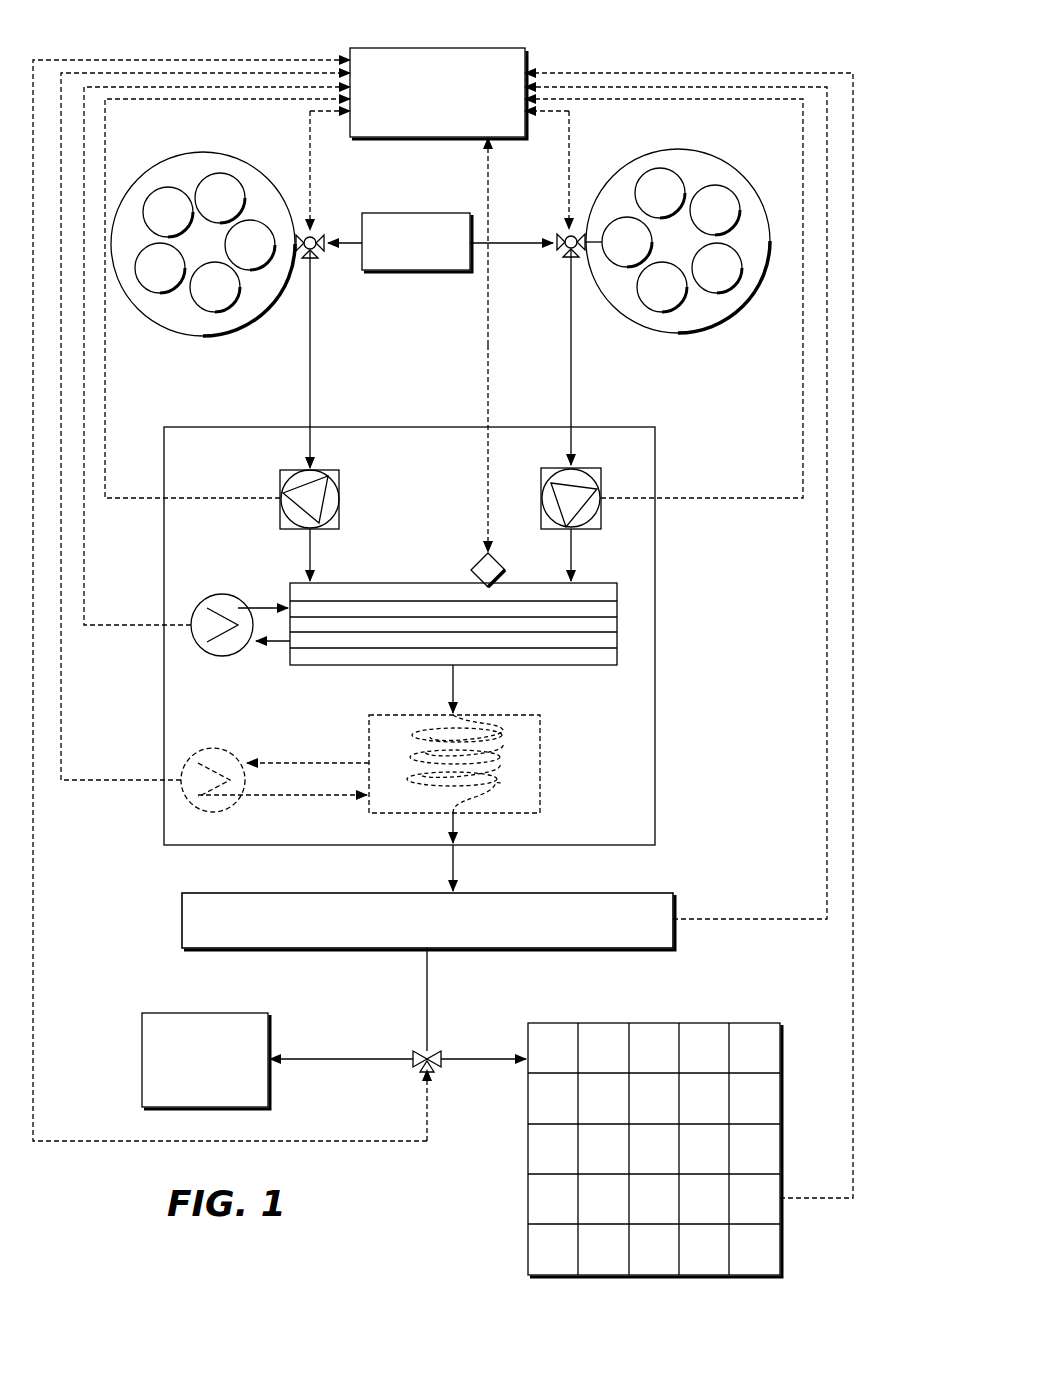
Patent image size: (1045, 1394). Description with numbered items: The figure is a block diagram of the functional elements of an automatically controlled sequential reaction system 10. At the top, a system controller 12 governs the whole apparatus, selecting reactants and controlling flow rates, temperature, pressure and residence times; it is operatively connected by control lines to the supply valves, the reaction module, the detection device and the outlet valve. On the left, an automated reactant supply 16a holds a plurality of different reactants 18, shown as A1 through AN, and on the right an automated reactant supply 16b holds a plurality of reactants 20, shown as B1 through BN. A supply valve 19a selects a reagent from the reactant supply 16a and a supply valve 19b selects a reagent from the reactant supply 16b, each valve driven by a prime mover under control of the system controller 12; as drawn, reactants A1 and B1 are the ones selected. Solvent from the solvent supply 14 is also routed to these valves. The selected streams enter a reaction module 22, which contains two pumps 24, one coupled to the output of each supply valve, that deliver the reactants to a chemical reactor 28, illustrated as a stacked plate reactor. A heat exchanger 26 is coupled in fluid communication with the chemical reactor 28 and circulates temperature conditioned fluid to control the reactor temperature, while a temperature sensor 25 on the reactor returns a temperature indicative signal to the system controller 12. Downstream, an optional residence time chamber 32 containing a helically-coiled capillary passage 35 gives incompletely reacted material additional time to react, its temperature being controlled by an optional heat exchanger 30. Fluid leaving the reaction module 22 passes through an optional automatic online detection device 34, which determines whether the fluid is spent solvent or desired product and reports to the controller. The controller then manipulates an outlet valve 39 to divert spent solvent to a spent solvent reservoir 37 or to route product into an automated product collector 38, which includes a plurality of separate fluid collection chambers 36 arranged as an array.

The sequential reaction system 10 is at (686, 62).
The system controller 12 is at (528, 58).
The solvent supply 14 is at (398, 213).
The automated reactant supply 16a is at (190, 337).
The automated reactant supply 16b is at (672, 334).
The reactants 18 is at (264, 274).
The supply valve 19a is at (319, 259).
The supply valve 19b is at (563, 257).
The reactants 20 is at (619, 214).
The reaction module 22 is at (656, 460).
The pumps 24 is at (340, 498).
The temperature sensor 25 is at (470, 571).
The heat exchanger 26 is at (222, 594).
The chemical reactor 28 is at (598, 583).
The optional heat exchanger 30 is at (217, 748).
The residence time chamber 32 is at (542, 762).
The automatic online detection device 34 is at (677, 913).
The helically-coiled capillary passage 35 is at (503, 783).
The fluid collection chambers 36 is at (528, 1104).
The spent solvent reservoir 37 is at (270, 1036).
The automated product collector 38 is at (530, 1019).
The outlet valve 39 is at (412, 1054).